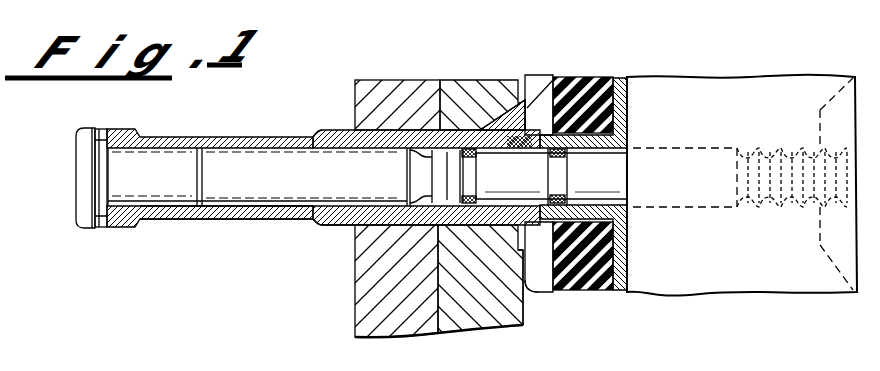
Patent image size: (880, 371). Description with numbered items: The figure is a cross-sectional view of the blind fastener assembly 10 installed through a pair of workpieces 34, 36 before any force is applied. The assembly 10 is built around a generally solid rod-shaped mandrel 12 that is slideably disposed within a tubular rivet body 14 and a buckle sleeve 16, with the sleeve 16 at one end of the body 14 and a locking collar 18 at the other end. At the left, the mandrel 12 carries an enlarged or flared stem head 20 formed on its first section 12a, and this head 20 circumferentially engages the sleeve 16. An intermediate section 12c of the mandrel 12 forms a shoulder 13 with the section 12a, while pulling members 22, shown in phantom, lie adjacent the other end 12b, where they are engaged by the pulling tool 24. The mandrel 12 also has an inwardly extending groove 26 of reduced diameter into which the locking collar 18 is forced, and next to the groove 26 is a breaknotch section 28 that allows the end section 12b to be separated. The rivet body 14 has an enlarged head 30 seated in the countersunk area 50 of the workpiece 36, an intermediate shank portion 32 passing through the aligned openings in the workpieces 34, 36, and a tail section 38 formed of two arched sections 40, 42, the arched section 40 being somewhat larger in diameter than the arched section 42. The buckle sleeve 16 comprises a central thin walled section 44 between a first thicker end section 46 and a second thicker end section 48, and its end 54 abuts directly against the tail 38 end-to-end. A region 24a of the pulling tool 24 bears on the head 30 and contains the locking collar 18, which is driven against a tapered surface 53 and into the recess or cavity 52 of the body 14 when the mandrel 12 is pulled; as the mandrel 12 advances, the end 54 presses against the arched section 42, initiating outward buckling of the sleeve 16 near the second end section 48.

The fastener assembly 10 is at (243, 272).
The mandrel 12 is at (233, 163).
The first section of mandrel 12a is at (162, 182).
The other end of mandrel 12b is at (515, 160).
The intermediate section of mandrel 12c is at (262, 163).
The shoulder 13 is at (199, 150).
The rivet body 14 is at (343, 225).
The buckle sleeve 16 is at (253, 210).
The locking collar 18 is at (540, 125).
The stem head 20 is at (85, 211).
The pulling members 22 is at (780, 210).
The pulling tool 24 is at (678, 93).
The region of pulling tool 24a is at (525, 113).
The groove 26 is at (414, 160).
The breaknotch section 28 is at (442, 200).
The enlarged head 30 is at (520, 228).
The shank portion 32 is at (358, 288).
The workpiece 34 is at (375, 313).
The workpiece 36 is at (490, 327).
The tail section 38 is at (325, 218).
The arched section 40 is at (318, 134).
The arched section 42 is at (313, 138).
The central thin walled section 44 is at (205, 208).
The first thicker end section 46 is at (128, 219).
The second thicker end section 48 is at (304, 220).
The countersunk area 50 is at (556, 282).
The recess or cavity 52 is at (518, 295).
The tapered surface 53 is at (490, 135).
The end of sleeve 54 is at (316, 221).